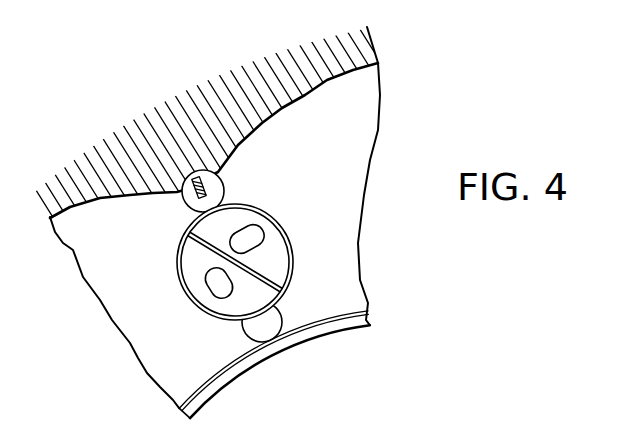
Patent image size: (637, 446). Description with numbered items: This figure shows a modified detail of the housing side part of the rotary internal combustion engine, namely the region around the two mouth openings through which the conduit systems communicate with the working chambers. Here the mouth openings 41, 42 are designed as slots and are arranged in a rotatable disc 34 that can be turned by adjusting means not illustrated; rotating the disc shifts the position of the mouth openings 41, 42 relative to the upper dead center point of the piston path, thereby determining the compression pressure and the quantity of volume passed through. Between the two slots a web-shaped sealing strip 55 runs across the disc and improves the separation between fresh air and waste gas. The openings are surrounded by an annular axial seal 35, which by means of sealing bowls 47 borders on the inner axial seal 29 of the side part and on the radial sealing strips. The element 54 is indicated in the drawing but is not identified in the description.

The inner axial seal 29 is at (312, 324).
The radial sealing strip 34 is at (208, 180).
The annular axial seal 35 is at (178, 264).
The mouth opening 41 is at (217, 295).
The mouth opening 42 is at (261, 232).
The sealing bowl 47 is at (193, 203).
The inner ring 54 is at (275, 256).
The web-shaped sealing strip 55 is at (261, 277).